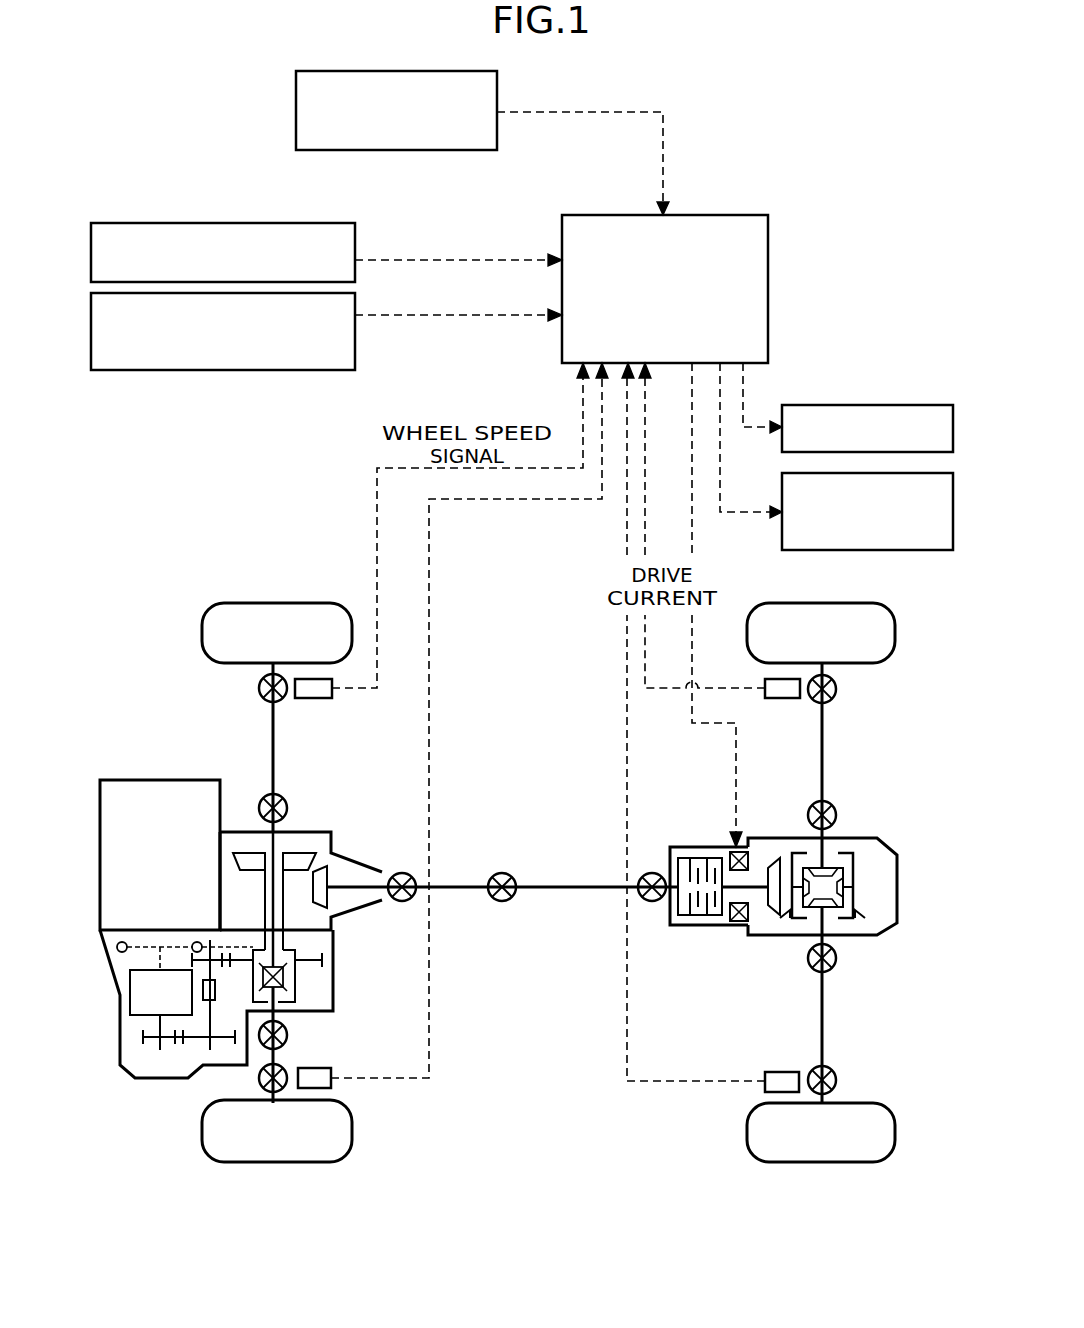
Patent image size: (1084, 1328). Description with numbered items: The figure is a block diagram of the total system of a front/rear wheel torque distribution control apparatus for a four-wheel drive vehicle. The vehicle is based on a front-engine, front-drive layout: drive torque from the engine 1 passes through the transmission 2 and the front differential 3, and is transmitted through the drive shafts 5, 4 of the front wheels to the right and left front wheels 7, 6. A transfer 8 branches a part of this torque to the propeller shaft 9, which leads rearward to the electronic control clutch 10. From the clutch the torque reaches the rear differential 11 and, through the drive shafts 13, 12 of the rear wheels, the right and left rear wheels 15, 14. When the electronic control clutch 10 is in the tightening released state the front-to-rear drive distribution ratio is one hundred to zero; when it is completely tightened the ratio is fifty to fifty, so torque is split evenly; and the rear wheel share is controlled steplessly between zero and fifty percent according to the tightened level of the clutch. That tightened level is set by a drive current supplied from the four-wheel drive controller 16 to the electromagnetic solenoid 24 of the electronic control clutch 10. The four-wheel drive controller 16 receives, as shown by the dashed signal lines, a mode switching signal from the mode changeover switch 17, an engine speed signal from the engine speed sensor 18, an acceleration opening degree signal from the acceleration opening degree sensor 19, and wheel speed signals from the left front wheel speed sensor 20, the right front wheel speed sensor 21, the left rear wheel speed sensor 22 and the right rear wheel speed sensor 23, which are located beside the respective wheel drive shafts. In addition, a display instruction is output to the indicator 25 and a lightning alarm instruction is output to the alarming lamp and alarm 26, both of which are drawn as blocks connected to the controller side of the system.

The engine 1 is at (150, 780).
The transmission 2 is at (112, 975).
The front differential 3 is at (318, 984).
The drive shaft of a front wheel 4 is at (288, 1040).
The drive shaft of a front wheel 5 is at (275, 766).
The left front wheel 6 is at (202, 1130).
The right front wheel 7 is at (202, 640).
The transfer 8 is at (345, 855).
The propeller shaft 9 is at (548, 886).
The electronic control clutch 10 is at (700, 932).
The rear differential 11 is at (868, 856).
The drive shaft of a rear wheel 12 is at (824, 1020).
The drive shaft of a rear wheel 13 is at (824, 755).
The left rear wheel 14 is at (895, 1130).
The right rear wheel 15 is at (895, 640).
The four-wheel drive controller 16 is at (728, 215).
The mode changeover switch 17 is at (296, 100).
The engine speed sensor 18 is at (172, 223).
The acceleration opening degree sensor 19 is at (170, 370).
The left front wheel speed sensor 20 is at (330, 1068).
The right front wheel speed sensor 21 is at (305, 700).
The left rear wheel speed sensor 22 is at (775, 1072).
The right rear wheel speed sensor 23 is at (782, 700).
The electromagnetic solenoid 24 is at (746, 852).
The indicator 25 is at (898, 405).
The alarming lamp and alarm 26 is at (890, 550).